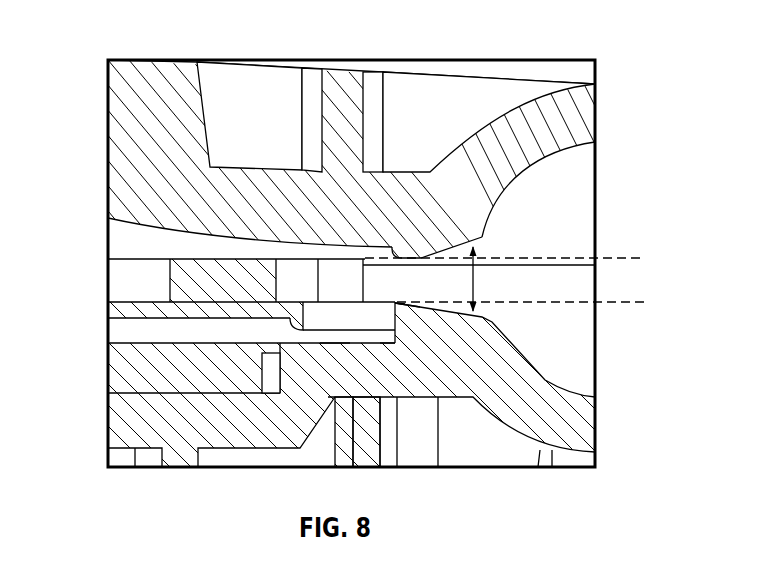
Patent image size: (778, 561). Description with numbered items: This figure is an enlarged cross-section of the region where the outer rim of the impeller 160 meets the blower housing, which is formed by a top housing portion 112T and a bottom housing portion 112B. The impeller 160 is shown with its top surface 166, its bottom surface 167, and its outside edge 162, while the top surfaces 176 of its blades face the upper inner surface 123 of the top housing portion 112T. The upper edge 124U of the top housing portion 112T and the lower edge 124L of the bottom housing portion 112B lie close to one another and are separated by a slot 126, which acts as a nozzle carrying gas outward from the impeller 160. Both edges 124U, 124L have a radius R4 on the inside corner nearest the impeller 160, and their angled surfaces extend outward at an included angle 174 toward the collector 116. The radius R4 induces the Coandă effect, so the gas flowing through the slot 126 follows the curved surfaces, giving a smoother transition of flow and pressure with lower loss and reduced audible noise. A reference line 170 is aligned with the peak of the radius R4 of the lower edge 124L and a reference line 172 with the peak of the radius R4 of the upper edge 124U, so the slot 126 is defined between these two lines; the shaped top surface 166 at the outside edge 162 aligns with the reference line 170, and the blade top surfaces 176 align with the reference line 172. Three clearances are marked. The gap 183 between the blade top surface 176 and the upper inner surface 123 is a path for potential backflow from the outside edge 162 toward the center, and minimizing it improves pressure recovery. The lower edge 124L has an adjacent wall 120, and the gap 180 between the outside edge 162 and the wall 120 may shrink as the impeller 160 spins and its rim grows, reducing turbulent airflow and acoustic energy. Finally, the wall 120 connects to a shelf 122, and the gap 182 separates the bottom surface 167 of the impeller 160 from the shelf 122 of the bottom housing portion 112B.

The top housing portion 112T is at (143, 133).
The bottom housing portion 112B is at (130, 426).
The collector 116 is at (563, 181).
The wall 120 is at (388, 330).
The shelf 122 is at (310, 340).
The upper inner surface 123 is at (172, 235).
The upper edge 124U is at (469, 242).
The lower edge 124L is at (406, 313).
The slot 126 is at (399, 284).
The impeller 160 is at (187, 283).
The outside edge 162 is at (397, 301).
The top surface 166 is at (210, 148).
The bottom surface 167 is at (333, 346).
The reference line 170 is at (615, 304).
The reference line 172 is at (615, 256).
The included angle 174 is at (476, 276).
The top surface of blade 176 is at (307, 299).
The gap 180 is at (390, 346).
The gap 182 is at (299, 338).
The gap 183 is at (346, 253).
The radius R4 is at (398, 249).